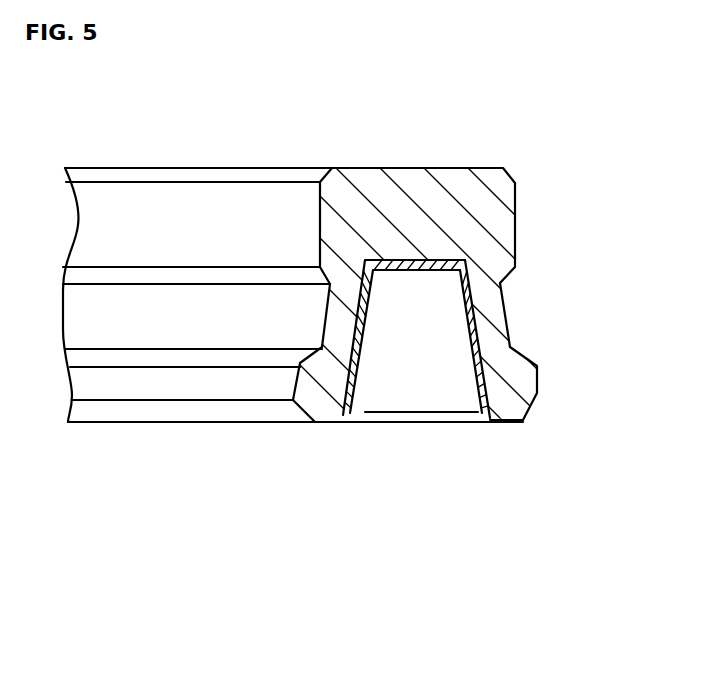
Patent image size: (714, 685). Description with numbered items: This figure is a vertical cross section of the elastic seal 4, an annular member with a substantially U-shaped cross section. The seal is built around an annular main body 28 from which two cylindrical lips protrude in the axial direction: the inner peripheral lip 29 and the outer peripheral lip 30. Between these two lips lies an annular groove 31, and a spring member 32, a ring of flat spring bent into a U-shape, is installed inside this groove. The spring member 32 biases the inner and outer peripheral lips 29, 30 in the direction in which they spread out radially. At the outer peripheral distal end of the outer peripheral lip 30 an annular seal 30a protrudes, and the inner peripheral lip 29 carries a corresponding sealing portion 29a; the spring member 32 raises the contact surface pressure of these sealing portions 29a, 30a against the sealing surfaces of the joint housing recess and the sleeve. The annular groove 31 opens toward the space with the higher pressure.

The elastic seal 4 is at (399, 299).
The annular main body 28 is at (417, 193).
The inner peripheral lip 29 is at (333, 313).
The sealing portion 29a is at (293, 388).
The outer peripheral lip 30 is at (502, 312).
The annular seal 30a is at (540, 380).
The annular groove 31 is at (388, 378).
The spring member 32 is at (465, 335).